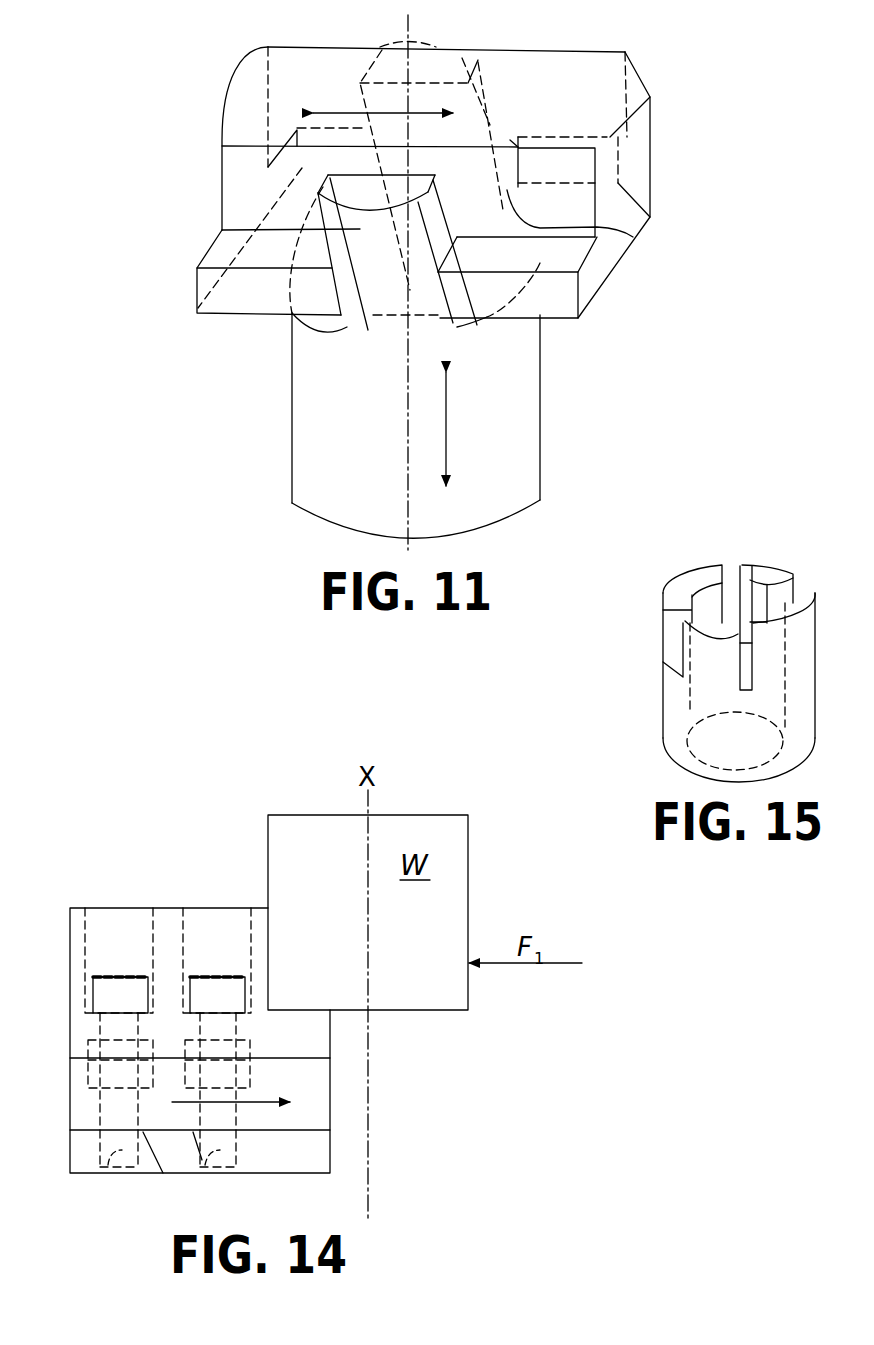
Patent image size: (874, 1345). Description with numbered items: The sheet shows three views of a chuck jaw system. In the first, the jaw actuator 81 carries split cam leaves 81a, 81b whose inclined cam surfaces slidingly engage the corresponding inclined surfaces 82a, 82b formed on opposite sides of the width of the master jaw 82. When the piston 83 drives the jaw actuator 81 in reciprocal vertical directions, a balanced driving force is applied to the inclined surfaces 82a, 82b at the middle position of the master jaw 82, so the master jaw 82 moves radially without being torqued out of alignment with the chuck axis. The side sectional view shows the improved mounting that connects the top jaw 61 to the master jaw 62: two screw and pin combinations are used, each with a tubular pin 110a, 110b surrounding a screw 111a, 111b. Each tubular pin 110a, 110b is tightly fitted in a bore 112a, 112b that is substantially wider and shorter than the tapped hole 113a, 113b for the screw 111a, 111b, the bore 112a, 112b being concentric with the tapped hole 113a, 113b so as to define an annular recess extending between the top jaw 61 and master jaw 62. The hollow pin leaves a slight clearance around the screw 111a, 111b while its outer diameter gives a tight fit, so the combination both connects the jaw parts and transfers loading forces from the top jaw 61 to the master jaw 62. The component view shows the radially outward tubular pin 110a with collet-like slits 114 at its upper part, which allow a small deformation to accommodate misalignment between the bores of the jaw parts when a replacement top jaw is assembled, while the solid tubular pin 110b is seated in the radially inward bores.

In FIG. 11, the jaw actuator 81 is at (566, 372).
In FIG. 11, the actuator leaf 81a is at (300, 338).
In FIG. 11, the actuator leaf 81b is at (425, 68).
In FIG. 11, the master jaw 82 is at (565, 72).
In FIG. 11, the inclined surface 82a is at (343, 301).
In FIG. 11, the inclined surface 82b is at (628, 247).
In FIG. 11, the piston 83 is at (537, 483).
In FIG. 14, the top jaw 61 is at (68, 920).
In FIG. 14, the master jaw 62 is at (288, 1148).
In FIG. 15, the tubular pin 110a is at (673, 702).
In FIG. 14, the tubular pin 110a is at (88, 1052).
In FIG. 14, the tubular pin 110b is at (260, 1035).
In FIG. 14, the screw 111a is at (125, 977).
In FIG. 14, the screw 111b is at (218, 977).
In FIG. 14, the bore 112a is at (92, 1082).
In FIG. 14, the bore 112b is at (252, 1085).
In FIG. 14, the tapped hole 113a is at (118, 1166).
In FIG. 14, the tapped hole 113b is at (218, 1167).
In FIG. 15, the collet-like slits 114 is at (733, 582).